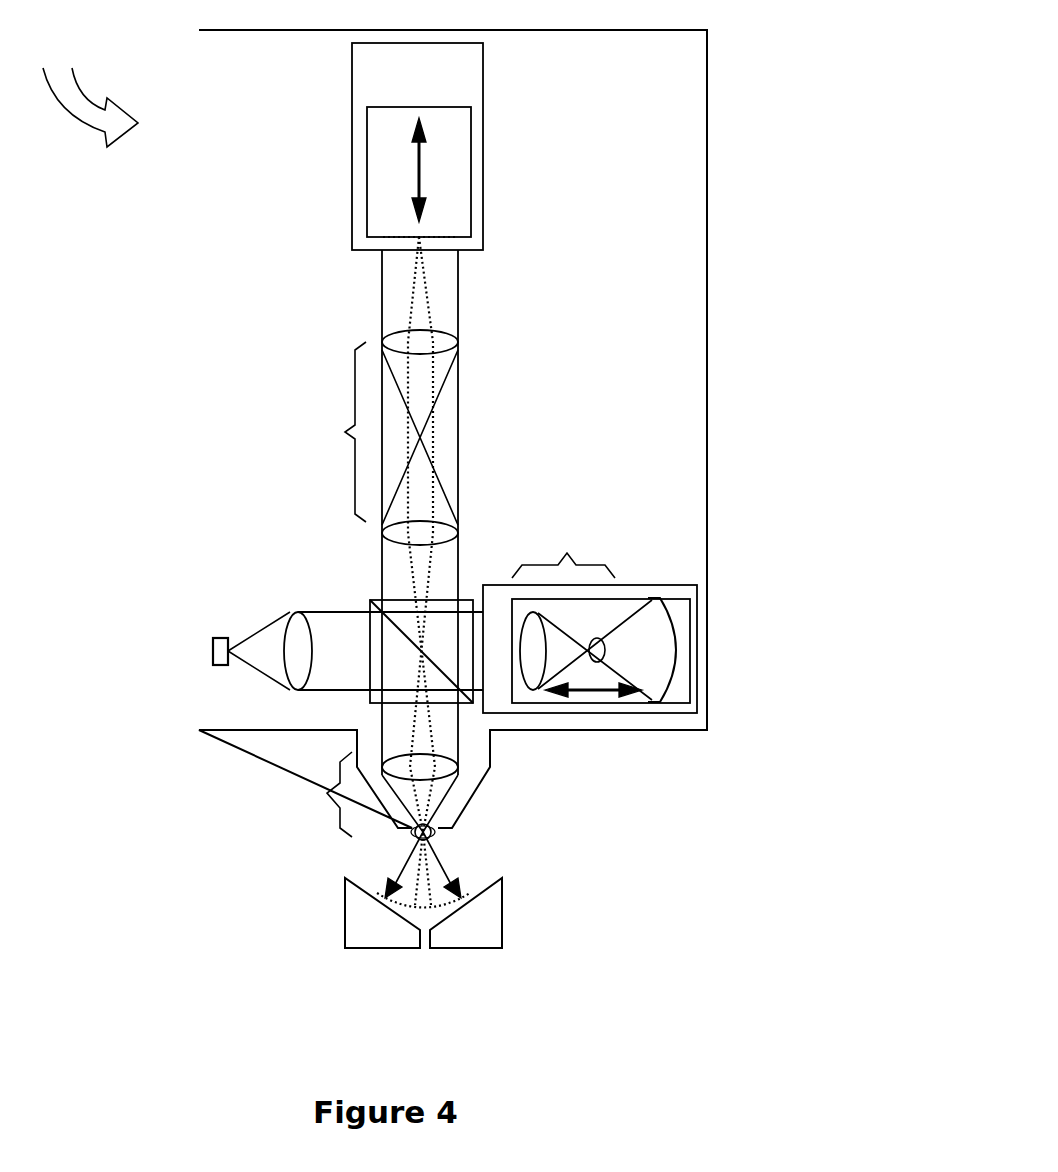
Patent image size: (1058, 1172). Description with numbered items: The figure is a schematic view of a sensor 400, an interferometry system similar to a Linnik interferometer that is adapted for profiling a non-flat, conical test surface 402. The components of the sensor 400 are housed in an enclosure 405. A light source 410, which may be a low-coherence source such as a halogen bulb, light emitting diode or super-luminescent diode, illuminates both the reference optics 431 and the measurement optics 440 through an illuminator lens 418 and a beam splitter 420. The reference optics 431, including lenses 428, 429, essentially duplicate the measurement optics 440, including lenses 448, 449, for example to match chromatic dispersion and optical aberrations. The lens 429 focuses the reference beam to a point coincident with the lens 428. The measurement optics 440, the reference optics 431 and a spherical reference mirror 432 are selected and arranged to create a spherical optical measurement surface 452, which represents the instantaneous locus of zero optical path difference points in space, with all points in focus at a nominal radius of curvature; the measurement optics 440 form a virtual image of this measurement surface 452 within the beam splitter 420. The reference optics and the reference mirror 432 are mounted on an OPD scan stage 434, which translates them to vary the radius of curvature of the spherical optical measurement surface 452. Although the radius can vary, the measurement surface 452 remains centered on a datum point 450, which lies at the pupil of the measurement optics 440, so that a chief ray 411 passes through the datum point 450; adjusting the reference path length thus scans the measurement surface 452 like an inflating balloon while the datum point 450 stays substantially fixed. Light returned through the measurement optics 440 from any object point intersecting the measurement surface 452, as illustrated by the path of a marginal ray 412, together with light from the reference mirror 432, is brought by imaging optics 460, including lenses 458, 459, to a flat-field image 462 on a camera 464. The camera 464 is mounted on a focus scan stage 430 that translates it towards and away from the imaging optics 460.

The sensor 400 is at (90, 85).
The conical test surface 402 is at (502, 877).
The enclosure 405 is at (705, 207).
The light source 410 is at (213, 650).
The chief ray 411 is at (450, 368).
The marginal ray 412 is at (435, 437).
The illuminator lens 418 is at (290, 612).
The beam splitter 420 is at (373, 602).
The lens 428 is at (603, 663).
The lens 429 is at (538, 663).
The focus scan stage 430 is at (483, 158).
The reference optics 431 is at (567, 553).
The spherical reference mirror 432 is at (652, 599).
The OPD scan stage 434 is at (697, 650).
The measurement optics 440 is at (327, 793).
The lens 448 is at (438, 832).
The lens 449 is at (447, 768).
The datum point 450 is at (410, 837).
The spherical optical measurement surface 452 is at (473, 893).
The lens 458 is at (447, 535).
The lens 459 is at (445, 340).
The imaging optics 460 is at (340, 432).
The flat-field image 462 is at (377, 242).
The camera 464 is at (367, 172).